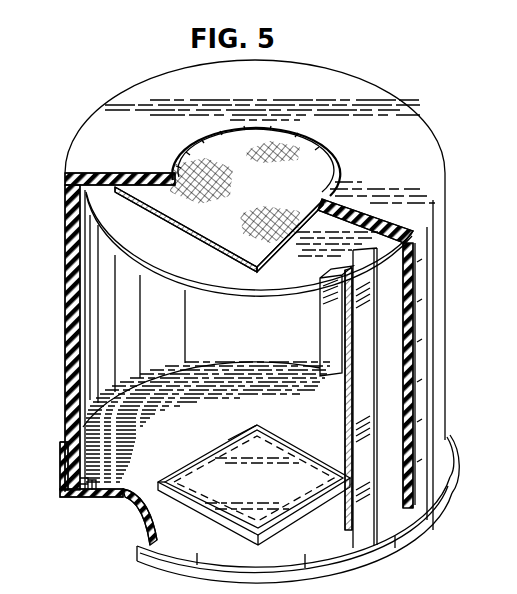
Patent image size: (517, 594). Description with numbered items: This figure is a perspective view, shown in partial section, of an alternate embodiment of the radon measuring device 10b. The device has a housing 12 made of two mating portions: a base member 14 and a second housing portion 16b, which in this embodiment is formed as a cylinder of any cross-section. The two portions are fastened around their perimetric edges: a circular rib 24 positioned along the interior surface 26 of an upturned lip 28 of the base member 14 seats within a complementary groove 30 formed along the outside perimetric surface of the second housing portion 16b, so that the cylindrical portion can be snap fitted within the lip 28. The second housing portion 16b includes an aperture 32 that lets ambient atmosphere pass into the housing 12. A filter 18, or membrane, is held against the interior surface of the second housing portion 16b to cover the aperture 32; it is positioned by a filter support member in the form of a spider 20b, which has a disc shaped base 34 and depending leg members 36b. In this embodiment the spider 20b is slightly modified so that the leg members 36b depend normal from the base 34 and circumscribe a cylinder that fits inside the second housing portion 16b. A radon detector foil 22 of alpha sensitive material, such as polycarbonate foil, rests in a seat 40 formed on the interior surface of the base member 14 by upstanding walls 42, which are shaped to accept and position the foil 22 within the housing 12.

The radon measuring device 10b is at (363, 60).
The housing 12 is at (449, 182).
The base member 14 is at (388, 549).
The second housing portion 16b is at (419, 110).
The filter 18 is at (282, 200).
The spider 20b is at (266, 300).
The detector foil 22 is at (277, 499).
The circular rib 24 is at (62, 482).
The interior surface 26 is at (72, 494).
The upturned lip 28 is at (72, 491).
The groove 30 is at (86, 496).
The aperture 32 is at (322, 168).
The disc shaped base 34 is at (160, 251).
The leg members 36b is at (82, 331).
The seat 40 is at (186, 454).
The upstanding walls 42 is at (228, 440).